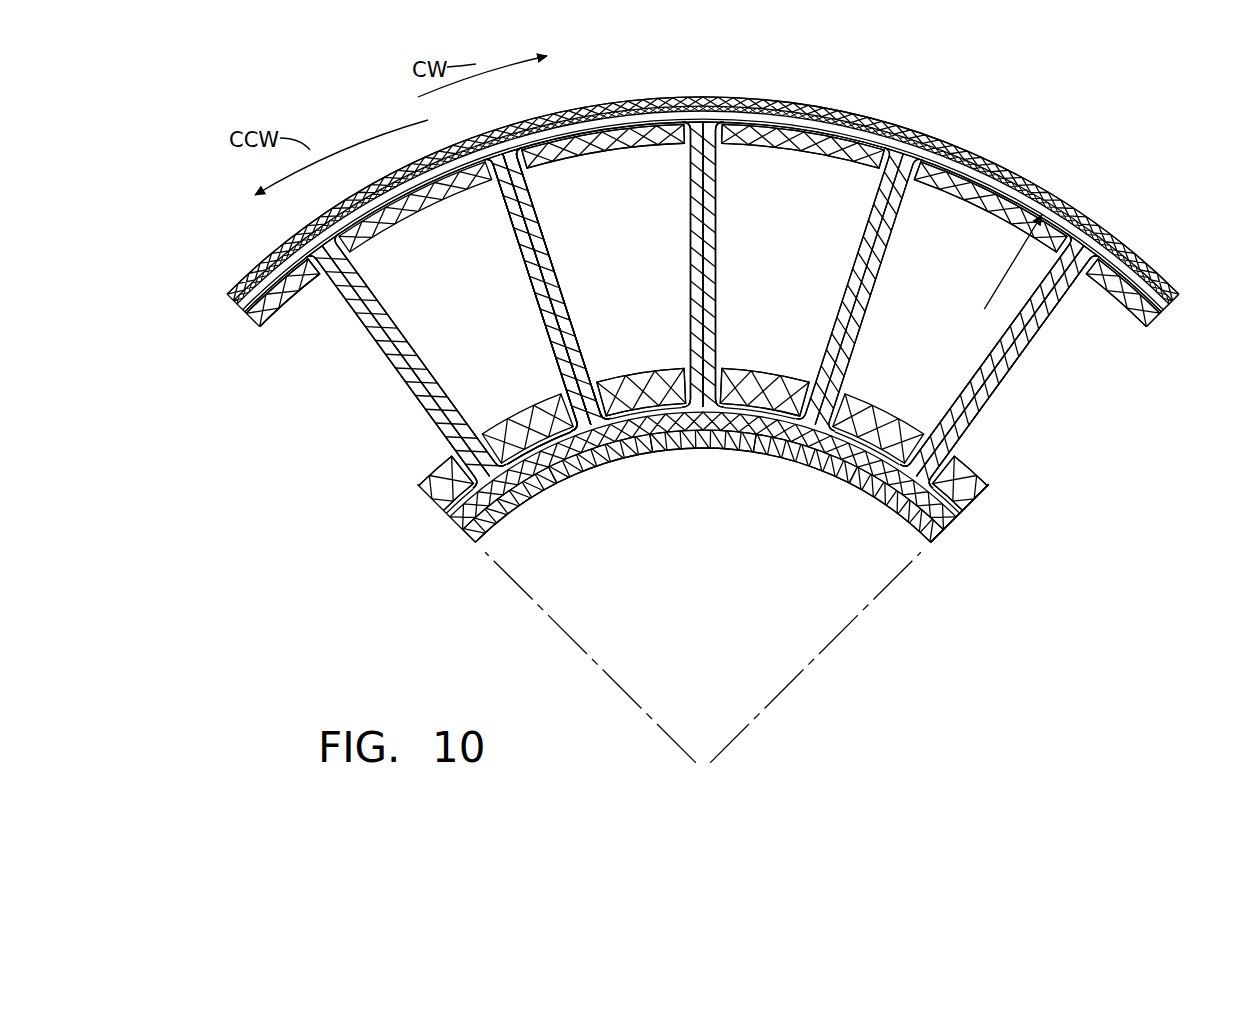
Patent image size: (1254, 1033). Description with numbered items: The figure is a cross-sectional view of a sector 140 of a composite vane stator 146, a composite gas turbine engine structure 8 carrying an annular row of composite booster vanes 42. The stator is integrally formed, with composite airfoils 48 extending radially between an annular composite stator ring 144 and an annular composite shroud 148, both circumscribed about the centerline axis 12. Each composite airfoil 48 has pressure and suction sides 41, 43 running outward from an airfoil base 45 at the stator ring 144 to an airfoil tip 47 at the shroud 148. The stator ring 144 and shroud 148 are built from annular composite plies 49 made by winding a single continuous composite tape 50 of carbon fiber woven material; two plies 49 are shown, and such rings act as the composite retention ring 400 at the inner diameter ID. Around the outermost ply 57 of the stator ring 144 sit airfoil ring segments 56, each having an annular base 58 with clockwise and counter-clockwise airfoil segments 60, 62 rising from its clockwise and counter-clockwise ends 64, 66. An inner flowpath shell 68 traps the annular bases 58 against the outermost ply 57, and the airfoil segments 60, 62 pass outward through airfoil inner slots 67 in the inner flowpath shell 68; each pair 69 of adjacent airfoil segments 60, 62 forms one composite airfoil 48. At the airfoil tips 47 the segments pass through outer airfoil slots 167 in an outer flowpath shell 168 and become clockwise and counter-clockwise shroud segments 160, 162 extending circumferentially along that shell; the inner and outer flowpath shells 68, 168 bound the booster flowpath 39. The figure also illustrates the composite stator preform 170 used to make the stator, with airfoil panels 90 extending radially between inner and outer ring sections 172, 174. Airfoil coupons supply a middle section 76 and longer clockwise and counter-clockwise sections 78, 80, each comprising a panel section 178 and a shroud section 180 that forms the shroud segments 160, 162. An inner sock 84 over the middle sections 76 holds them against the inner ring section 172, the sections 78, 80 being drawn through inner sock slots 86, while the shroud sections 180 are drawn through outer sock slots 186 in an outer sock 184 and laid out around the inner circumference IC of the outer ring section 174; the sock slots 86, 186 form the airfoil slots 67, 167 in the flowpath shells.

The composite gas turbine engine structure 8 is at (425, 603).
The centerline axis 12 is at (710, 770).
The booster flowpath 39 is at (470, 298).
The pressure side 41 is at (1000, 380).
The composite booster vanes 42 is at (540, 230).
The suction side 43 is at (990, 353).
The airfoil base 45 is at (958, 455).
The airfoil tip 47 is at (1082, 272).
The composite airfoils 48 is at (535, 188).
The composite plies 49 is at (500, 122).
The composite tape 50 is at (713, 447).
The airfoil ring segments 56 is at (948, 506).
The outermost ply 57 is at (585, 345).
The annular base 58 is at (755, 372).
The clockwise airfoil segment 60 is at (857, 252).
The counter-clockwise airfoil segment 62 is at (718, 208).
The clockwise end 64 is at (807, 450).
The counter-clockwise end 66 is at (728, 347).
The airfoil inner slots 67 is at (452, 430).
The inner flowpath shell 68 is at (435, 468).
The pair of airfoil segments 69 is at (322, 246).
The middle section 76 is at (553, 413).
The clockwise section 78 is at (413, 387).
The counter-clockwise section 80 is at (437, 393).
The inner sock 84 is at (625, 375).
The inner sock slots 86 is at (897, 505).
The airfoil panels 90 is at (562, 302).
The sector 140 is at (880, 552).
The composite stator ring 144 is at (943, 528).
The composite vane stator 146 is at (235, 297).
The annular composite shroud 148 is at (1173, 298).
The clockwise shroud segment 160 is at (373, 193).
The counter-clockwise shroud segment 162 is at (447, 150).
The outer airfoil slots 167 is at (700, 122).
The outer flowpath shell 168 is at (285, 307).
The composite stator preform 170 is at (1153, 328).
The inner ring section 172 is at (937, 535).
The outer ring section 174 is at (1073, 208).
The panel section 178 is at (405, 340).
The shroud section 180 is at (392, 212).
The outer sock 184 is at (798, 145).
The outer sock slots 186 is at (897, 148).
The composite retention ring 400 is at (642, 458).
The inner circumference IC is at (962, 182).
The inner diameter ID is at (1005, 266).